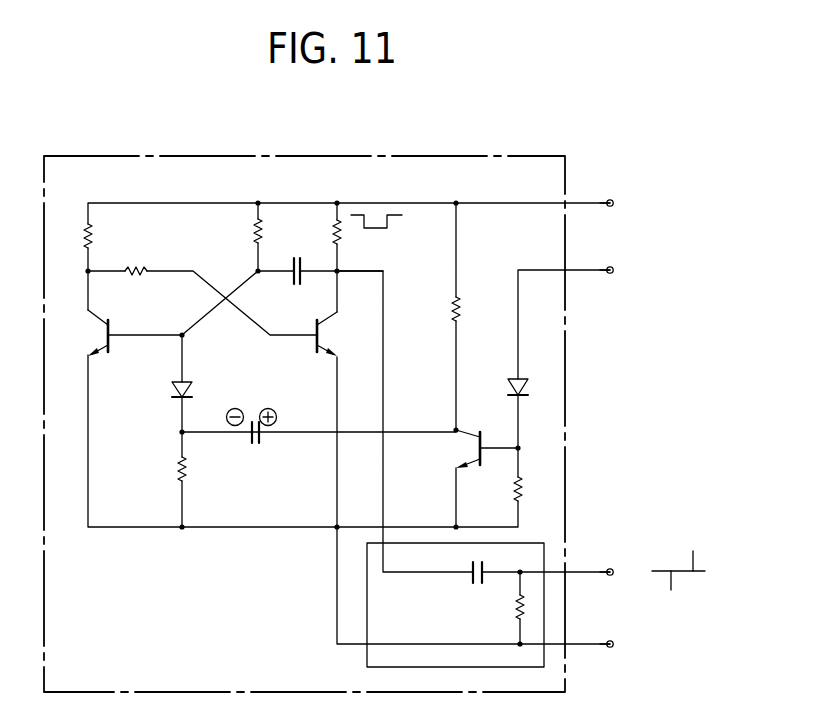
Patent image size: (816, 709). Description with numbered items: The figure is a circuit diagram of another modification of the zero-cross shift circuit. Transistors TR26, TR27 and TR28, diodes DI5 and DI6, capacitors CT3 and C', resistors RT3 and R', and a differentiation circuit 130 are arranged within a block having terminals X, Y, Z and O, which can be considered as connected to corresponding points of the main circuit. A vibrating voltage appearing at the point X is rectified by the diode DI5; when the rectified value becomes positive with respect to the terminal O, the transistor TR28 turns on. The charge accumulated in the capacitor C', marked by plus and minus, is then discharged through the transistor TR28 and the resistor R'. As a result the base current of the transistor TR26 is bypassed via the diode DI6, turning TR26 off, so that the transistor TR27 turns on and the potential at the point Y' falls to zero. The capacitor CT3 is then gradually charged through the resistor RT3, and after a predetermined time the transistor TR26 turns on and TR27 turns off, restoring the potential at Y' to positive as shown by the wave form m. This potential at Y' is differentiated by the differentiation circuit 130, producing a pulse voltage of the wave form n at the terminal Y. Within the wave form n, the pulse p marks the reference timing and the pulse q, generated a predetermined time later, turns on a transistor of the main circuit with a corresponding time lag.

The transistor TR26 is at (104, 330).
The transistor TR27 is at (324, 334).
The transistor TR28 is at (472, 455).
The resistor RT3 is at (252, 230).
The capacitor CT3 is at (295, 257).
The diode DI6 is at (195, 392).
The diode DI5 is at (507, 389).
The resistor R' is at (157, 465).
The capacitor C' is at (252, 453).
The point Y' is at (361, 252).
The wave form m is at (375, 218).
The differentiation circuit 130 is at (531, 534).
The wave form n is at (668, 554).
The pulse p is at (675, 585).
The pulse q is at (696, 553).
The terminal X is at (618, 272).
The terminal Y is at (618, 573).
The terminal Z is at (617, 200).
The terminal O is at (620, 645).